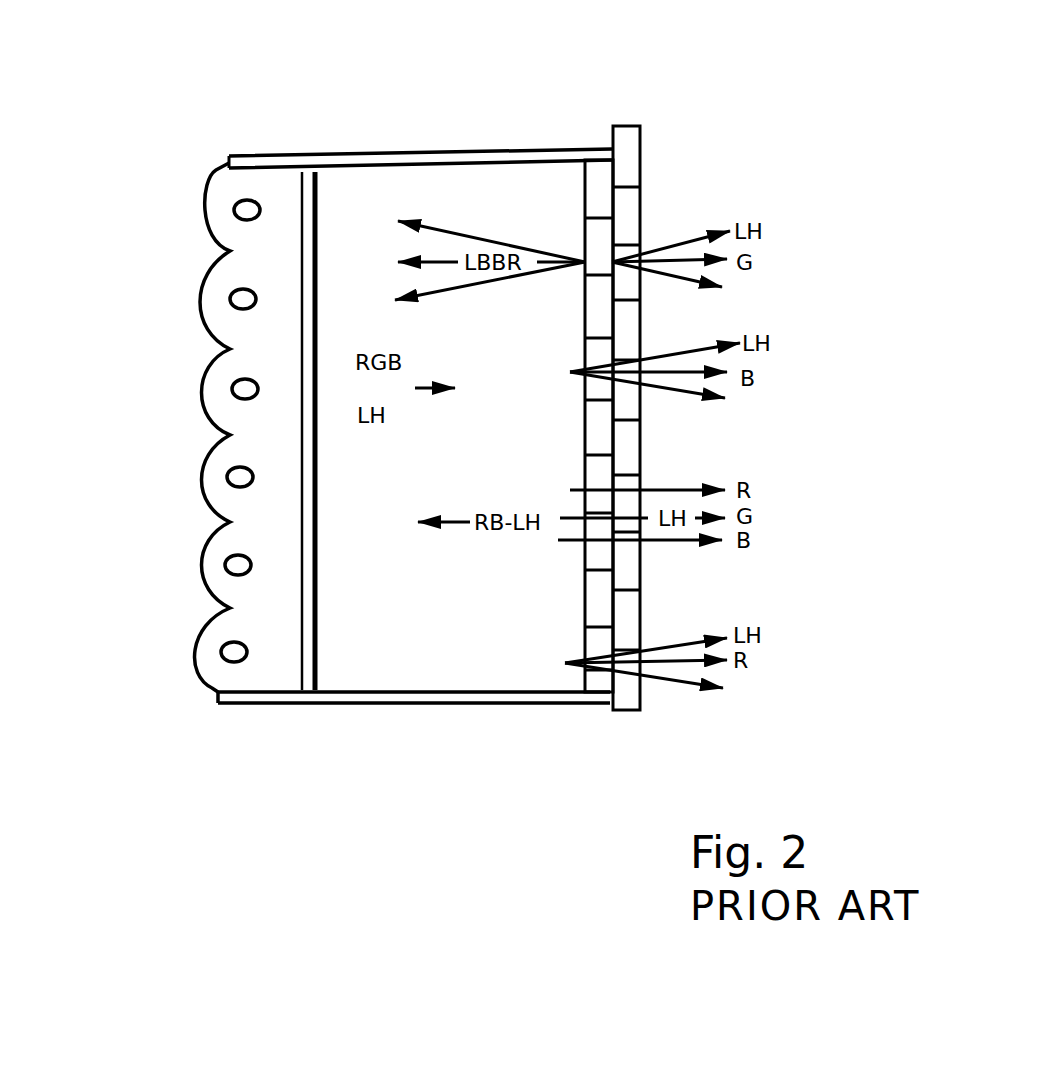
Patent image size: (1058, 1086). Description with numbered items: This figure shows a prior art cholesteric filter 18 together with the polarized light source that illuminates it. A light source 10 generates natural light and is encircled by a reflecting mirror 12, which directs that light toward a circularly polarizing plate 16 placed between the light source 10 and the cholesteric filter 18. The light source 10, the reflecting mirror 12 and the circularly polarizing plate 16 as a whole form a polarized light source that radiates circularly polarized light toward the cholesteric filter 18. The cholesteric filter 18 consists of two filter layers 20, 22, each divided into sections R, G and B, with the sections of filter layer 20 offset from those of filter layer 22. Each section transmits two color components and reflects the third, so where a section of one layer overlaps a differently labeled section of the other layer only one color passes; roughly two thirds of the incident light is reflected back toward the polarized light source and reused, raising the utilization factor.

The light source 10 is at (225, 296).
The reflecting mirror 12 is at (198, 674).
The circularly polarizing plate 16 is at (313, 152).
The cholesteric filter 18 is at (640, 108).
The filter layer 20 is at (596, 690).
The filter layer 22 is at (620, 710).